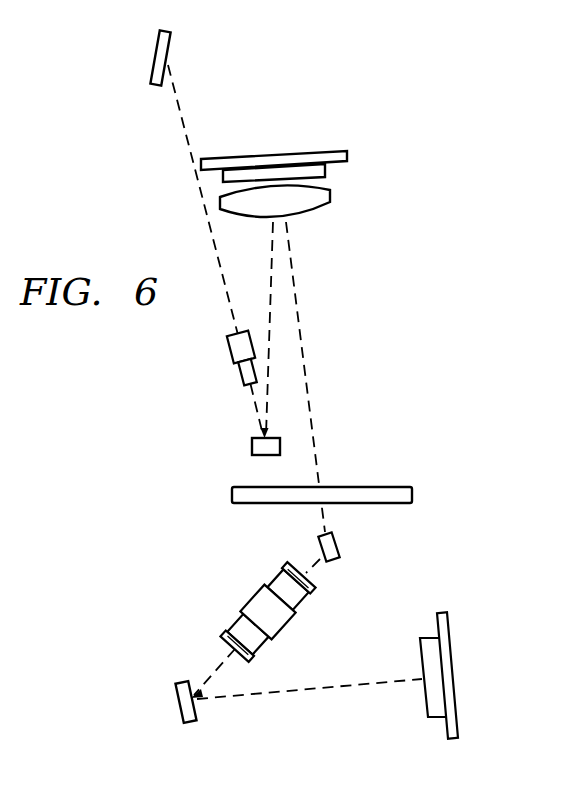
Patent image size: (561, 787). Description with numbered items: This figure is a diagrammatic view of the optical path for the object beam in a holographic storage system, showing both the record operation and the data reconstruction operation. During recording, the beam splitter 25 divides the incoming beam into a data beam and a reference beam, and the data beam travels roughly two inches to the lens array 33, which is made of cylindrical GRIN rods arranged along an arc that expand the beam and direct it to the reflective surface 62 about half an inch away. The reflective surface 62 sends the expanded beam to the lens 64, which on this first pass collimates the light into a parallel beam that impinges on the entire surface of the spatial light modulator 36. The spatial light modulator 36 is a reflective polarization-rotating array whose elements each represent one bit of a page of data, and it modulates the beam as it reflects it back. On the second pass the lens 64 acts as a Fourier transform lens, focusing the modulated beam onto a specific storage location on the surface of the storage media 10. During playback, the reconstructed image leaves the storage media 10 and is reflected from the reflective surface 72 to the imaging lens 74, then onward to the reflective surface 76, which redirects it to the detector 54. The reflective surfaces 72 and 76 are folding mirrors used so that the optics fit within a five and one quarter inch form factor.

The beam splitter 25 is at (158, 40).
The spatial light modulator 36 is at (293, 170).
The lens 64 is at (330, 197).
The lens array 33 is at (230, 340).
The reflective surface 62 is at (252, 445).
The storage media 10 is at (387, 488).
The reflective surface 72 is at (337, 550).
The imaging lens 74 is at (235, 613).
The reflective surface 76 is at (182, 710).
The detector 54 is at (433, 668).